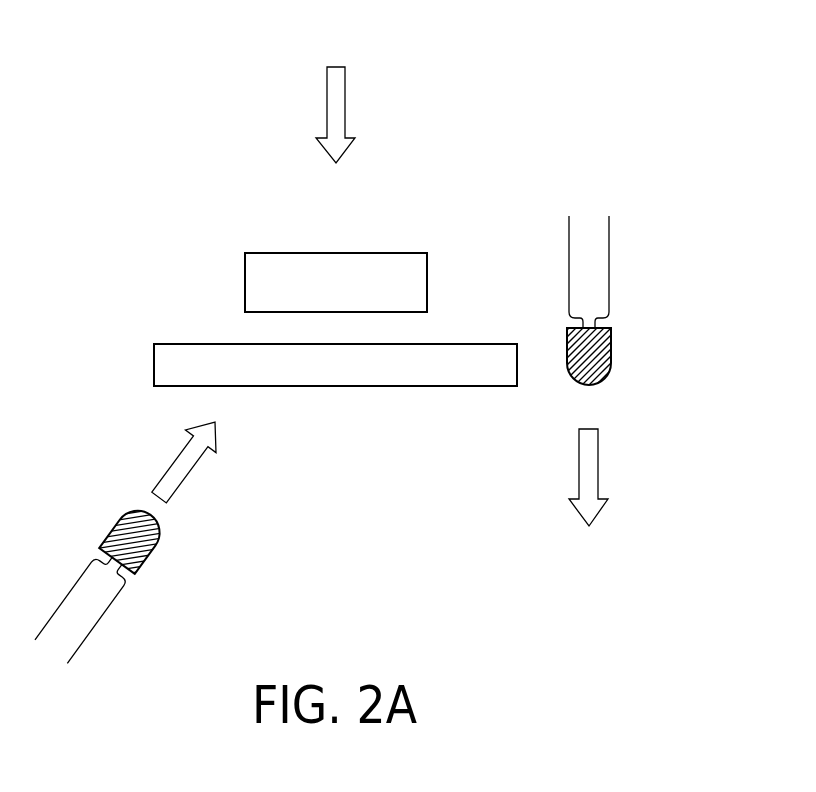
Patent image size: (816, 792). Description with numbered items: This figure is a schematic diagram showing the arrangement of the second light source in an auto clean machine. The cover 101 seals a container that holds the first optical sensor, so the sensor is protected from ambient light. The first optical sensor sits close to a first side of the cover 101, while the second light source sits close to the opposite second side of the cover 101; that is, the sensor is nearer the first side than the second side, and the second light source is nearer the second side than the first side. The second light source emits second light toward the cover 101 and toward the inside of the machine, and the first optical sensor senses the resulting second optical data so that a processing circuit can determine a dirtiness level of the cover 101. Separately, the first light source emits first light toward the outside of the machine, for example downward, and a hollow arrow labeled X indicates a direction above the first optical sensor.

The cover 101 is at (136, 328).
The direction X is at (335, 98).